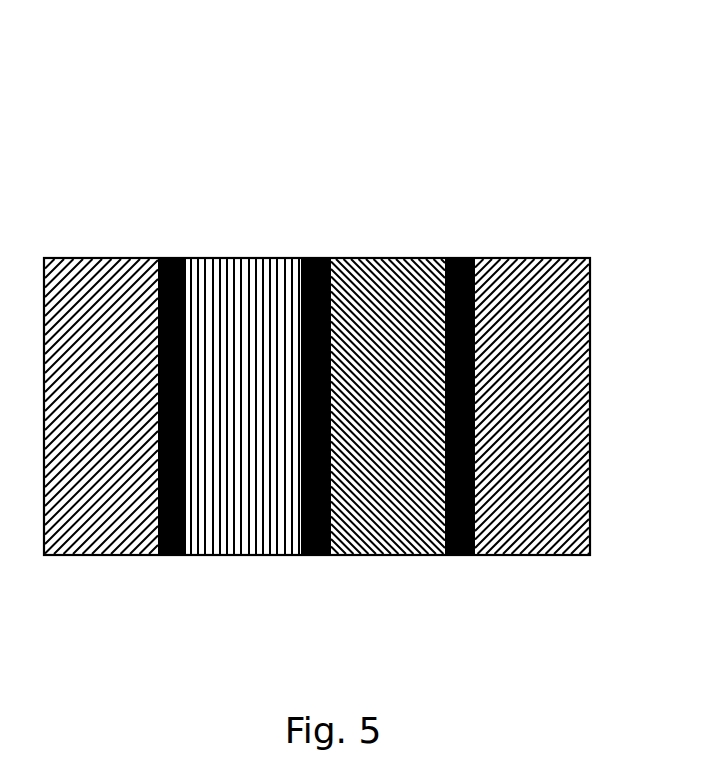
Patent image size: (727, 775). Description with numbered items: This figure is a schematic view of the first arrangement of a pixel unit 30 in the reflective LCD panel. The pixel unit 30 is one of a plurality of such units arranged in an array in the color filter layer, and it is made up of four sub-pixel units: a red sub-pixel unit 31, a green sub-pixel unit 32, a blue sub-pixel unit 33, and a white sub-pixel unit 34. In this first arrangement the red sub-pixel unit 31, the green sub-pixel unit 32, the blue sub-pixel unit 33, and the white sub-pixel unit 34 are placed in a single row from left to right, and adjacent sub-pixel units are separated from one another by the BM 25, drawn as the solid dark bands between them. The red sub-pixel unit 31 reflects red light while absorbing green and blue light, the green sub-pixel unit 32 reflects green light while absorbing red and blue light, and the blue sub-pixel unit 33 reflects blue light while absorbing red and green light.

The pixel unit 30 is at (344, 170).
The BM 25 is at (166, 250).
The red sub-pixel unit 31 is at (96, 498).
The green sub-pixel unit 32 is at (235, 500).
The blue sub-pixel unit 33 is at (380, 498).
The white sub-pixel unit 34 is at (523, 498).